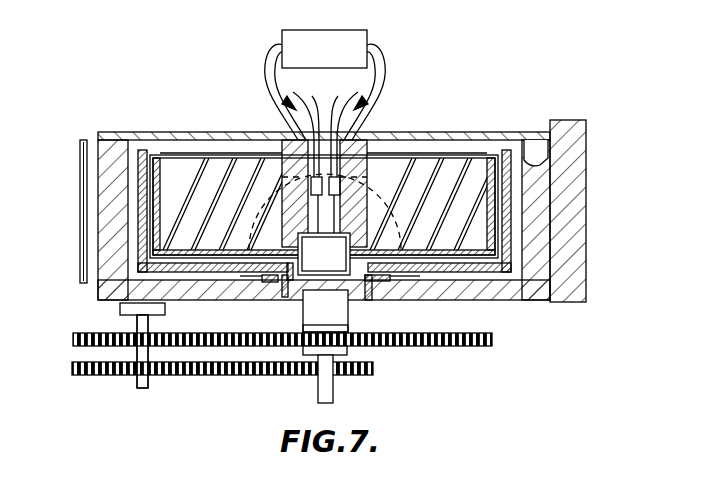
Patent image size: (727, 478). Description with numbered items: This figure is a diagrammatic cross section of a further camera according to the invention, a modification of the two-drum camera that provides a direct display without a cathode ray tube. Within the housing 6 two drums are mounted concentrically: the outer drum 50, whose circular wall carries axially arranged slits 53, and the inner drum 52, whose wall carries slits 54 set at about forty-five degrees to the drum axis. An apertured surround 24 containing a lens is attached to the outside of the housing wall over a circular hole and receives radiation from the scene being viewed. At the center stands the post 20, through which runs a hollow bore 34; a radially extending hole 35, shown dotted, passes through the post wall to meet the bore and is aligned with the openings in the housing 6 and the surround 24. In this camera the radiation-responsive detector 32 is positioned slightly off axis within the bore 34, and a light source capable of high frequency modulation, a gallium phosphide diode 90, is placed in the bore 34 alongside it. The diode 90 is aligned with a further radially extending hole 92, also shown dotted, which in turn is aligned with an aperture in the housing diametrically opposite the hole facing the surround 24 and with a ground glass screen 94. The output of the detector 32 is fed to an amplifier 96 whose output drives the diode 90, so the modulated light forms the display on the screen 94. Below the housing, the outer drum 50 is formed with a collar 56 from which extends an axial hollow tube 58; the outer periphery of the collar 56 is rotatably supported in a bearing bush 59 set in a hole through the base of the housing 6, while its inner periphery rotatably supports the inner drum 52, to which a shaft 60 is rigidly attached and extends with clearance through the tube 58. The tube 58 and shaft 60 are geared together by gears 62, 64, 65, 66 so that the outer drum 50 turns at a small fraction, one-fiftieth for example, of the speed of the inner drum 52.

The amplifier 96 is at (357, 44).
The ground glass screen 94 is at (82, 142).
The outer drum 50 is at (142, 152).
The inner drum 52 is at (148, 152).
The slits 53 is at (190, 156).
The slits 54 is at (225, 178).
The post 20 is at (297, 160).
The hollow bore 34 is at (327, 128).
The radiation-responsive detector 32 is at (350, 158).
The apertured surround 24 is at (583, 208).
The radially extending hole 35 is at (333, 212).
The gallium phosphide diode 90 is at (324, 254).
The housing 6 is at (188, 304).
The radially extending hole 92 is at (244, 302).
The collar 56 is at (302, 305).
The hollow tube 58 is at (348, 325).
The bearing bush 59 is at (395, 280).
The gear 64 is at (137, 330).
The gear 62 is at (428, 345).
The gear 65 is at (177, 375).
The gear 66 is at (310, 380).
The shaft 60 is at (333, 395).